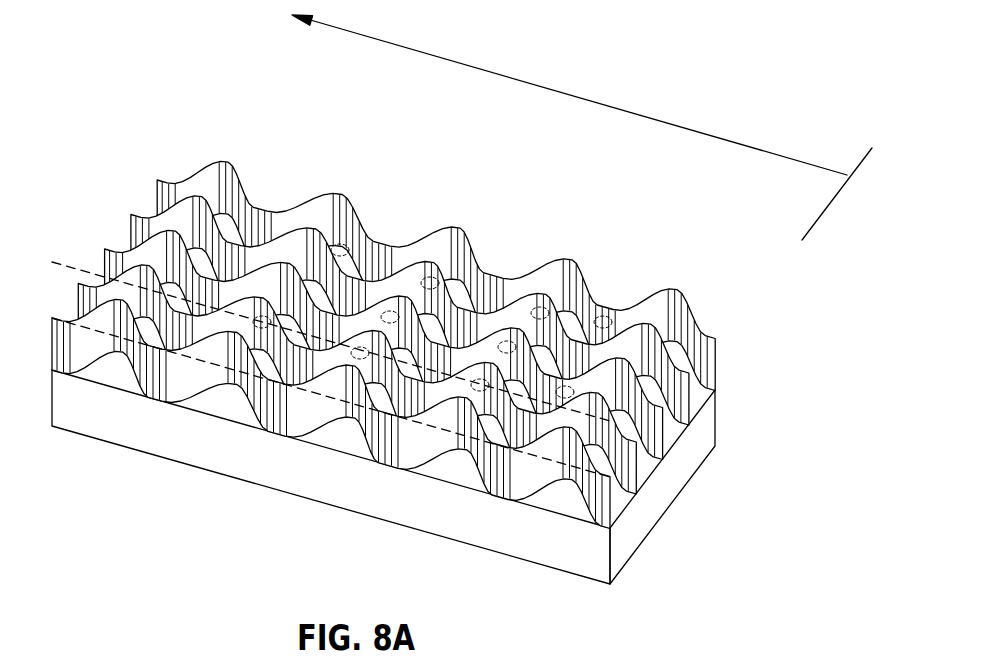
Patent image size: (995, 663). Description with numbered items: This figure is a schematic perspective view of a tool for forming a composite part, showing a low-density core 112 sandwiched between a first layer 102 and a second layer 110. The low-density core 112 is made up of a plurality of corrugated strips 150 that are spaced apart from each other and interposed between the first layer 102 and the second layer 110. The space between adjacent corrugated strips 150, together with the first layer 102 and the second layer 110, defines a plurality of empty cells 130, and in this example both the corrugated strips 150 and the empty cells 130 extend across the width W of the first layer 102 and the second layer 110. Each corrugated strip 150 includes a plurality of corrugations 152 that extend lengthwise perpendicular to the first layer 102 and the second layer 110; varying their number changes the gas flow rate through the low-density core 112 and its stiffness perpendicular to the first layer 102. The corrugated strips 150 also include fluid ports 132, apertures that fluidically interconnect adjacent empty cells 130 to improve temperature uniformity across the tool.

The width W is at (553, 90).
The first layer 102 is at (424, 396).
The second layer 110 is at (620, 537).
The low-density core 112 is at (557, 520).
The empty cell 130 is at (424, 372).
The fluid port 132 is at (392, 258).
The corrugated strip 150 is at (522, 467).
The corrugation 152 is at (165, 380).